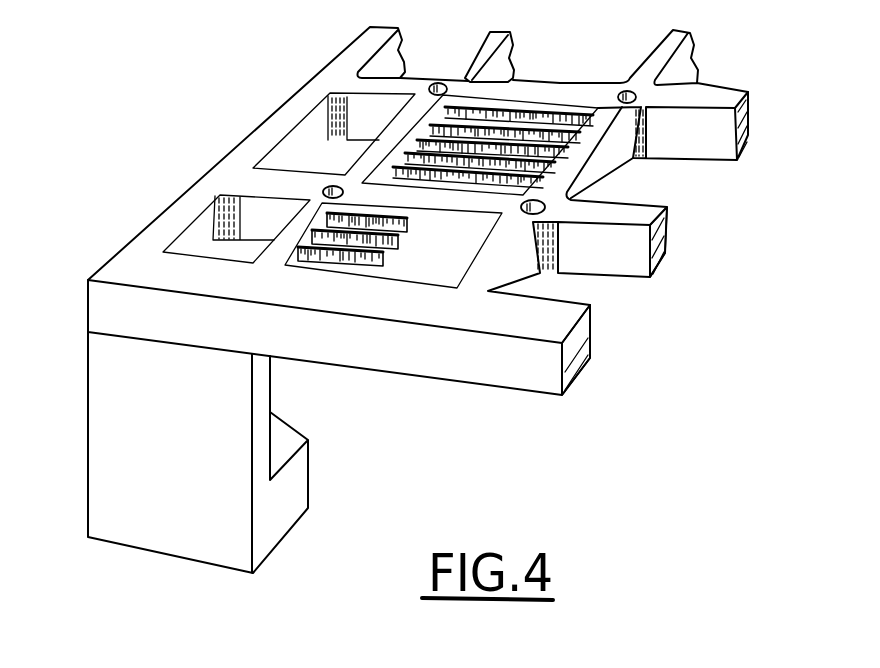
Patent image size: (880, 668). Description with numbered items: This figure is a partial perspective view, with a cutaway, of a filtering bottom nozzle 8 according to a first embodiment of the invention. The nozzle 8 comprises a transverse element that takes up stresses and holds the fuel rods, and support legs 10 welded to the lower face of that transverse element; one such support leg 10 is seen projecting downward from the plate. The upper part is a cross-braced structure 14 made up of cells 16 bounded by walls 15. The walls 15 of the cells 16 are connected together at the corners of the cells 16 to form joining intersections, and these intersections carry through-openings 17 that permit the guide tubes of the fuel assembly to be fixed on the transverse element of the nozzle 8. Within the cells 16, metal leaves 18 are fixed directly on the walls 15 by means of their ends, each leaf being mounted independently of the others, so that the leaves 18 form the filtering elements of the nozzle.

The filtering nozzle 8 is at (74, 454).
The support legs 10 is at (138, 513).
The cross-braced structure 14 is at (126, 216).
The walls 15 is at (664, 258).
The cells 16 is at (318, 128).
The through-openings 17 is at (545, 207).
The metal leaves 18 is at (553, 138).